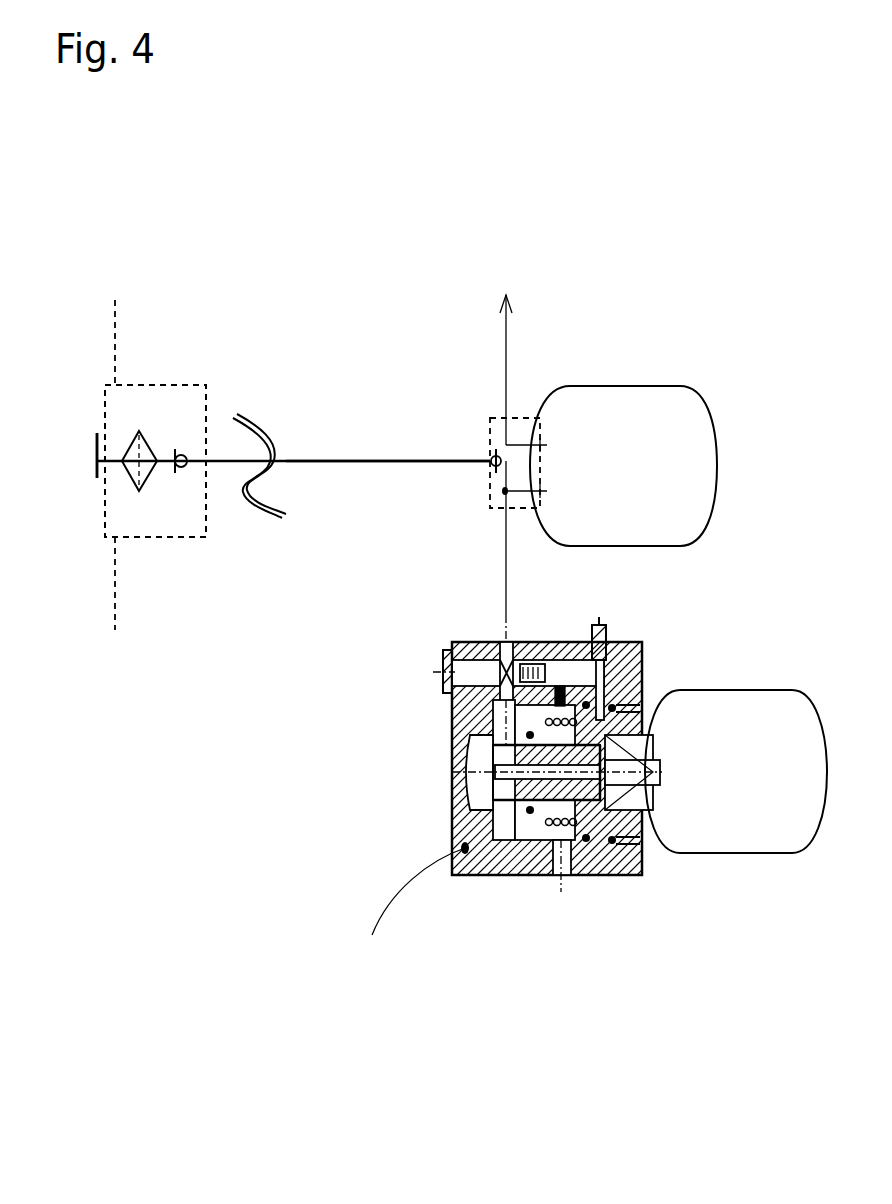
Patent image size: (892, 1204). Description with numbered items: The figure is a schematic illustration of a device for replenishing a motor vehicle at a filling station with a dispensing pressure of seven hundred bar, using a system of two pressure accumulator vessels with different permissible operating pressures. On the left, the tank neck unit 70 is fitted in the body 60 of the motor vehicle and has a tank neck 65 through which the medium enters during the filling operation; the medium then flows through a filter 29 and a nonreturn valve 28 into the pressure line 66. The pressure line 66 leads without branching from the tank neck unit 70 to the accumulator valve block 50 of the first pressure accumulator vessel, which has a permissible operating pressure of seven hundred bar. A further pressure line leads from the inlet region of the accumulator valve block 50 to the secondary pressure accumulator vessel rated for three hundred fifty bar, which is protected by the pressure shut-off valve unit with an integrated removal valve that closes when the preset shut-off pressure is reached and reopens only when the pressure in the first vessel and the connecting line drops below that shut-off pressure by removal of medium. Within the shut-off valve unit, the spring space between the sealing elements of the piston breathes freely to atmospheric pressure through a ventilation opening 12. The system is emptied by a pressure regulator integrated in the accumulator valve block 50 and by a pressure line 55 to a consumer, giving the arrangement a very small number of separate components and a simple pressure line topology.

The ventilation opening 12 is at (561, 883).
The nonreturn valve 28 is at (190, 438).
The filter 29 is at (149, 432).
The accumulator valve block 50 is at (525, 418).
The pressure line 55 is at (523, 338).
The body 60 is at (118, 593).
The tank neck 65 is at (97, 443).
The pressure line 66 is at (328, 461).
The tank neck unit 70 is at (170, 537).